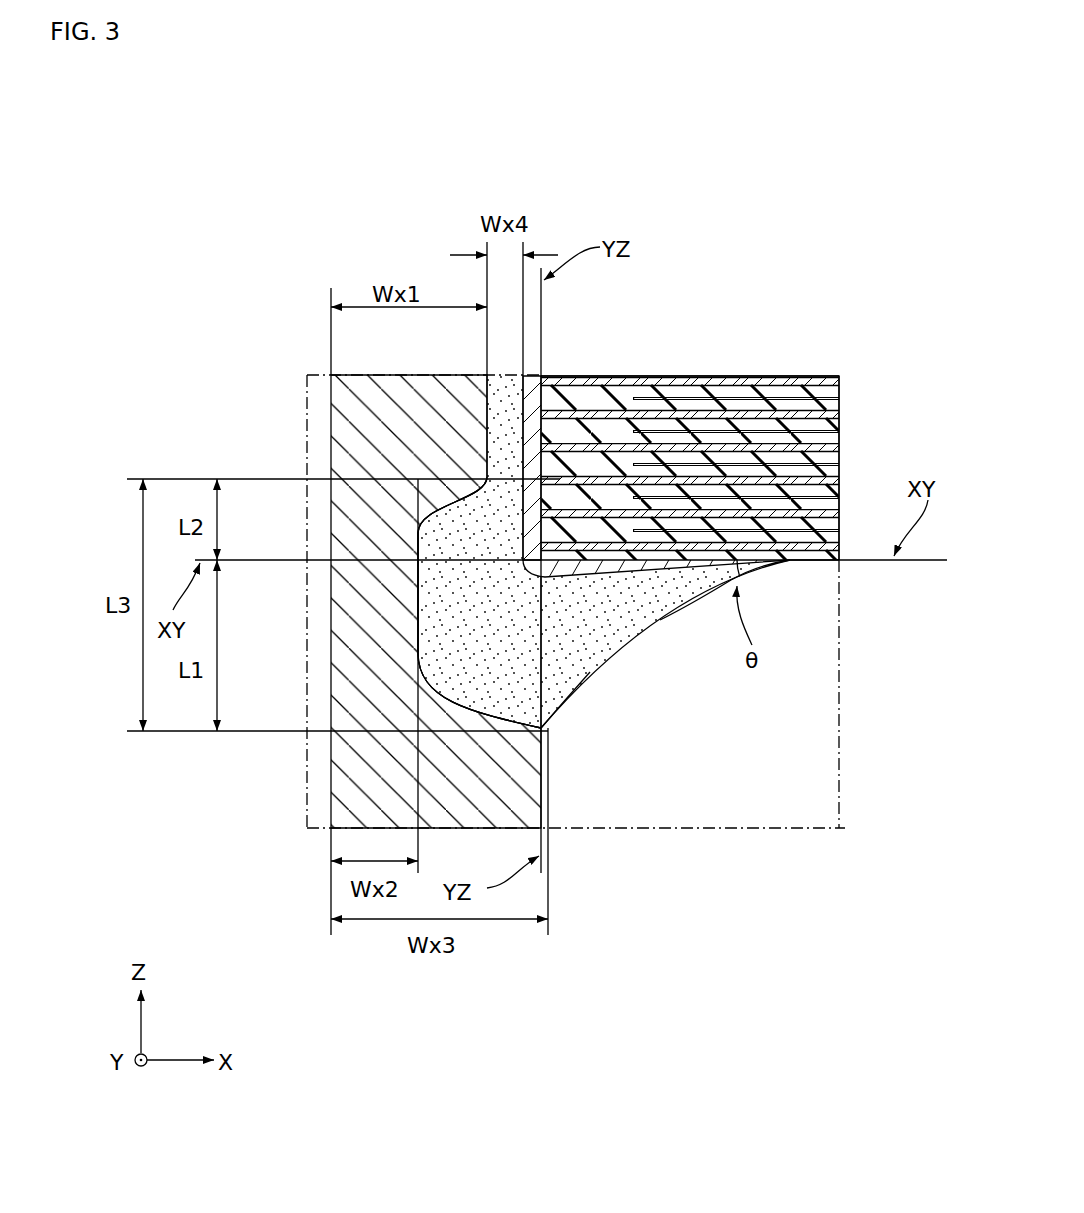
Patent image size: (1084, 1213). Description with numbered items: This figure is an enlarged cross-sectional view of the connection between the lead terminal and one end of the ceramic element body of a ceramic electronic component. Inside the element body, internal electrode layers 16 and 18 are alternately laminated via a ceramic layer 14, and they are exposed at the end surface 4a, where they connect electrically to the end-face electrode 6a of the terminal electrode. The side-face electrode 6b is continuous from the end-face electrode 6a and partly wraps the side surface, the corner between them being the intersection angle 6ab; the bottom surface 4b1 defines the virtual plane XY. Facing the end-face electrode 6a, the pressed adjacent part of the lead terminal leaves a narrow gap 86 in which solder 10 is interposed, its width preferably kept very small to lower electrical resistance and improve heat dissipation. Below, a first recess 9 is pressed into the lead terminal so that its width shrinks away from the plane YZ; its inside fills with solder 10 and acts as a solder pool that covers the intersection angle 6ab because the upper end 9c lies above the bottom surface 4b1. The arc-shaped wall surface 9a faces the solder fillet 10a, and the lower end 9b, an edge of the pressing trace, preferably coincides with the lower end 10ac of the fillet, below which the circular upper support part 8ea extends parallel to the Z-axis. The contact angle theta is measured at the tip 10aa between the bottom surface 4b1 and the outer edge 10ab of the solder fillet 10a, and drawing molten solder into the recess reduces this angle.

The end surface 4a is at (543, 376).
The bottom surface 4b1 is at (824, 561).
The end-face electrode 6a is at (563, 377).
The intersection angle 6ab is at (542, 612).
The side-face electrode 6b is at (593, 566).
The upper support part 8ea is at (342, 788).
The first recess 9 is at (411, 602).
The wall surface 9a is at (430, 632).
The lower end 9b is at (548, 733).
The upper end 9c is at (486, 476).
The solder 10 is at (500, 411).
The solder fillet 10a is at (650, 599).
The tip of the solder fillet 10aa is at (791, 561).
The outer edge of the solder fillet 10ab is at (703, 598).
The lower end of the solder fillet 10ac is at (549, 731).
The ceramic layer 14 is at (625, 392).
The internal electrode layer 16 is at (690, 380).
The internal electrode layer 18 is at (832, 398).
The gap 86 is at (508, 383).